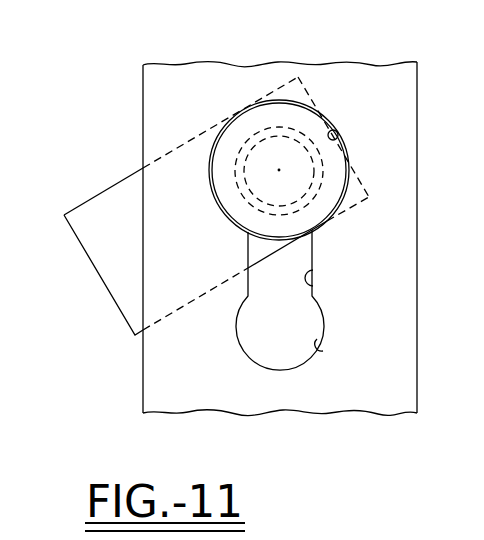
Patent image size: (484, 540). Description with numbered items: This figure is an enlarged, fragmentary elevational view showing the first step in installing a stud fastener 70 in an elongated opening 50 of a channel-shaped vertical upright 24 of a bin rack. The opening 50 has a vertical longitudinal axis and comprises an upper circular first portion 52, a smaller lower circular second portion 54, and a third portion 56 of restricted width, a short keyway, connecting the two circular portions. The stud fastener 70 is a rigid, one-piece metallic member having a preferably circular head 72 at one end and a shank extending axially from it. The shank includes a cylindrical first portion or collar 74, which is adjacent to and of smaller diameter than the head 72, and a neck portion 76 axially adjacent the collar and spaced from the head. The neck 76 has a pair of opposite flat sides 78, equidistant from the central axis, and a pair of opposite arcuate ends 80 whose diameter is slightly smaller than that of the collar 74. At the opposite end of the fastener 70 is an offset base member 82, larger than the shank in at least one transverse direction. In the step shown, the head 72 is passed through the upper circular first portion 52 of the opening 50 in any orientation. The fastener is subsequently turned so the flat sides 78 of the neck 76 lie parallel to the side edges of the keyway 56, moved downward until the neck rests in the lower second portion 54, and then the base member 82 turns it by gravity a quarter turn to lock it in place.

The channel-shaped upright 24 is at (143, 387).
The elongated opening 50 is at (297, 372).
The first portion 52 is at (342, 135).
The second portion 54 is at (323, 338).
The third portion 56 is at (313, 288).
The stud fastener 70 is at (118, 316).
The head 72 is at (228, 128).
The first portion of the shank 74 is at (277, 126).
The neck portion 76 is at (297, 125).
The flat sides 78 is at (300, 158).
The arcuate ends 80 is at (258, 130).
The base member 82 is at (122, 188).